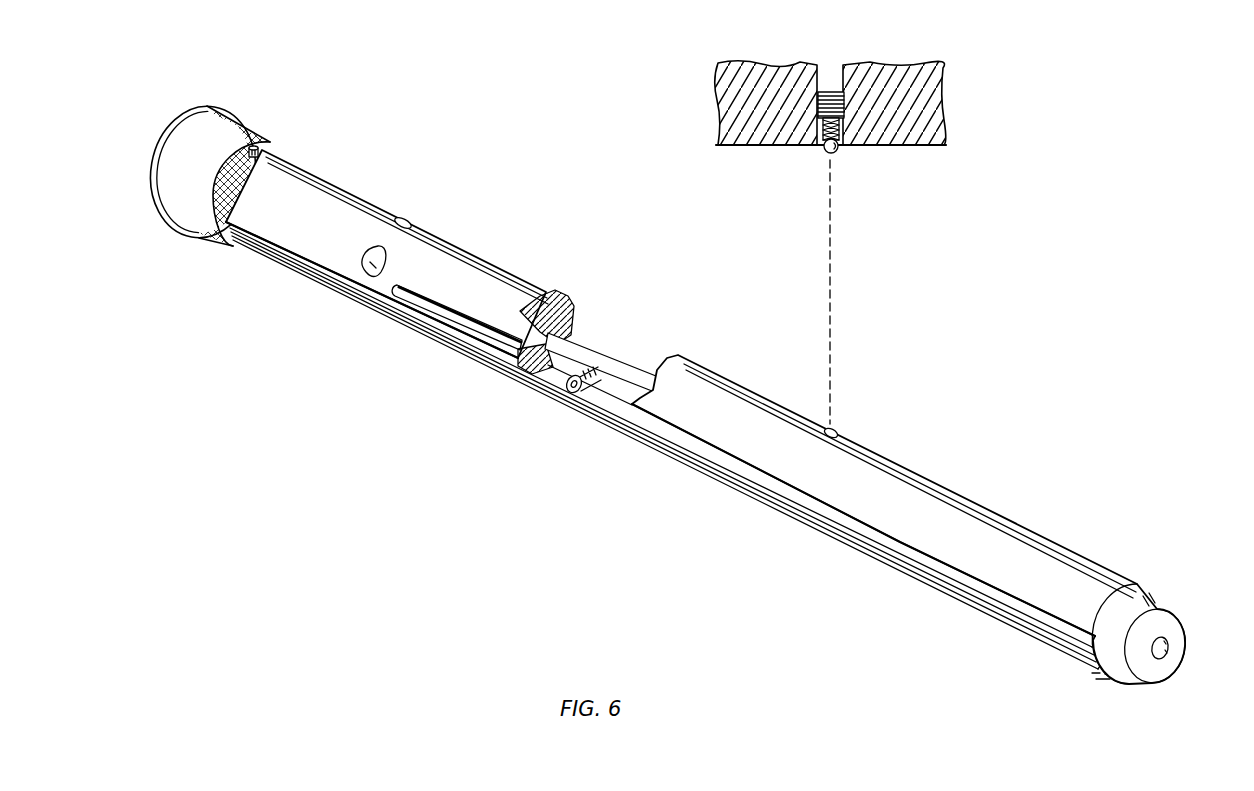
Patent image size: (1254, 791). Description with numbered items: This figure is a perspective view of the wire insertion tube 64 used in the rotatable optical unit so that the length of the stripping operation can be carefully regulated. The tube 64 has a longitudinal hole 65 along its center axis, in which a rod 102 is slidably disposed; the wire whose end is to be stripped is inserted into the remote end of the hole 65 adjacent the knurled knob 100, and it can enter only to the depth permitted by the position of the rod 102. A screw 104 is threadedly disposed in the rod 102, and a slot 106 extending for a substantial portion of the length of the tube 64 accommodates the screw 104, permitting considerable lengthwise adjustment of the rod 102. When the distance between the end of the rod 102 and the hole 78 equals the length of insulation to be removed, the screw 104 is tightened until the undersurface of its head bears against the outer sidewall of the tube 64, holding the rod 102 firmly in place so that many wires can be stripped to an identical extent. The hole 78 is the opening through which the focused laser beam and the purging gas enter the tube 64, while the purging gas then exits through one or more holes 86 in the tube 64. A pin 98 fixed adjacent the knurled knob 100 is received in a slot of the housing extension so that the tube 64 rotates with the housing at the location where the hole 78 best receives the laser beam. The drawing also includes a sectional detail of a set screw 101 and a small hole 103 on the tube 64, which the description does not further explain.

The knurled knob 100 is at (230, 120).
The pin 98 is at (263, 148).
The hole 78 is at (405, 223).
The hole 86 is at (368, 265).
The rod 102 is at (587, 360).
The screw 104 is at (570, 387).
The hole 103 is at (836, 430).
The set screw detail 101 is at (829, 92).
The wire insertion tube 64 is at (1092, 578).
The slot 106 is at (1028, 610).
The hole 65 is at (1165, 652).